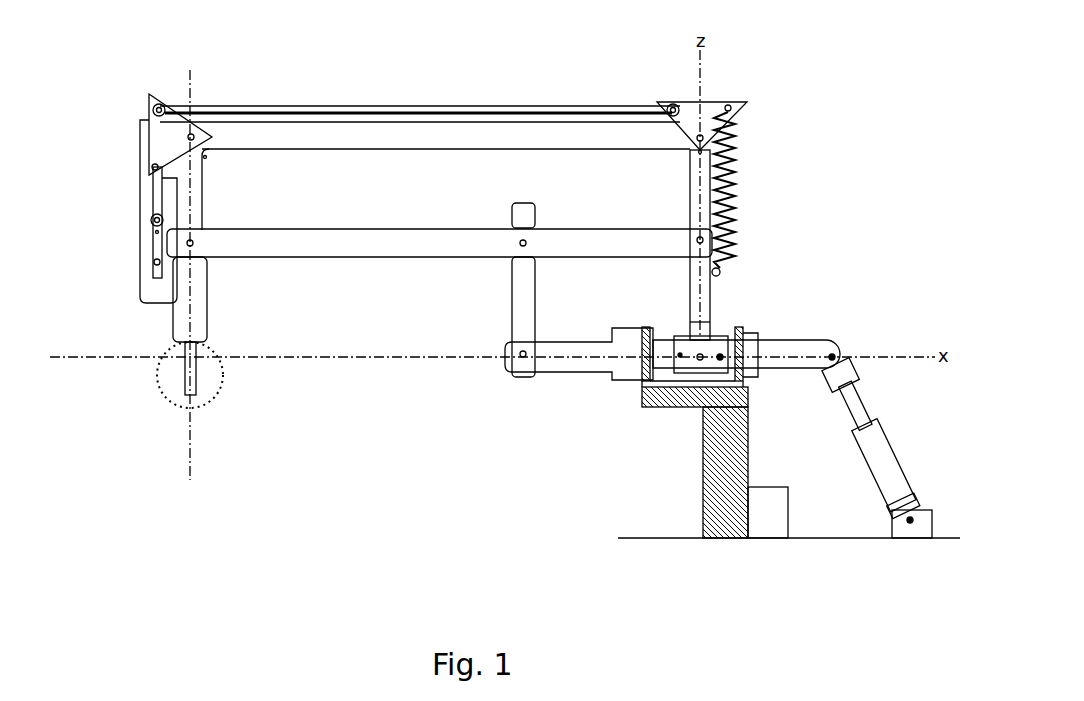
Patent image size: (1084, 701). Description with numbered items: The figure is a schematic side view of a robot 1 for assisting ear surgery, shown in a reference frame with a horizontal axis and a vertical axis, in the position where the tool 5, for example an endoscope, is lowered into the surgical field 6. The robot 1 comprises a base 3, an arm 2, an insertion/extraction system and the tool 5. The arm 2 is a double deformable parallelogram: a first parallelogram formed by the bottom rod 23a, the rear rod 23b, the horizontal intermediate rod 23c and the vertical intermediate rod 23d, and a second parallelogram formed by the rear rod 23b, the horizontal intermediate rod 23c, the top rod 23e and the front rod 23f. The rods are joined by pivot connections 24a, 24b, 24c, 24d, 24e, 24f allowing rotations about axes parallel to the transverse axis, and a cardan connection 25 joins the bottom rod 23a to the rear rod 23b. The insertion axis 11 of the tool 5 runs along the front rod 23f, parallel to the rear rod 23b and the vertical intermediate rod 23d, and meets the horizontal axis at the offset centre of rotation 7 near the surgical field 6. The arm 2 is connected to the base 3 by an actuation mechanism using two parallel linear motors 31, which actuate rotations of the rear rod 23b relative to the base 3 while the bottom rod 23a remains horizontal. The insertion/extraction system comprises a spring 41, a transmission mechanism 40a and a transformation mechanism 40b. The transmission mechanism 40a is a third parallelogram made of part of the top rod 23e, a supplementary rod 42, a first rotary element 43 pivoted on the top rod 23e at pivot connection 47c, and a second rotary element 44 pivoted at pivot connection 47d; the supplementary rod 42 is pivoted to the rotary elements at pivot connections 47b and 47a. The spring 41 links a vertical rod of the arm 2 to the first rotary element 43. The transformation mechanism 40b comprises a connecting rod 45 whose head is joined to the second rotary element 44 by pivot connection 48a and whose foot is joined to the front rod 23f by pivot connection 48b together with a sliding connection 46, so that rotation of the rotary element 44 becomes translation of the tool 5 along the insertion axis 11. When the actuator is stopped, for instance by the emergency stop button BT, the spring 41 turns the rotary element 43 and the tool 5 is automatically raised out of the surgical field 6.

The robot 1 is at (792, 57).
The arm 2 is at (385, 258).
The base 3 is at (680, 536).
The tool 5 is at (205, 312).
The surgical field 6 is at (160, 385).
The offset centre of rotation 7 is at (198, 358).
The insertion axis 11 is at (186, 452).
The bottom rod 23a is at (580, 372).
The rear rod 23b is at (690, 300).
The horizontal intermediate rod 23c is at (624, 257).
The vertical intermediate rod 23d is at (514, 326).
The top rod 23e is at (482, 150).
The front rod 23f is at (205, 190).
The pivot connection 24a is at (521, 356).
The pivot connection 24b is at (698, 238).
The pivot connection 24c is at (521, 241).
The pivot connection 24d is at (196, 242).
The pivot connection 24e is at (690, 160).
The pivot connection 24f is at (205, 158).
The connection 25 is at (700, 357).
The linear motor 31 is at (872, 448).
The mechanism for transmitting a rotation of a third type 40a is at (745, 104).
The mechanism for transforming the rotation of a third type into translation 40b is at (145, 185).
The spring 41 is at (735, 190).
The supplementary rod 42 is at (482, 110).
The first rotary element 43 is at (712, 108).
The second rotary element 44 is at (150, 130).
The connecting rod 45 is at (152, 216).
The sliding connection 46 is at (152, 262).
The pivot connection 47a is at (164, 104).
The pivot connection 47b is at (668, 106).
The pivot connection 47c is at (698, 134).
The pivot connection 47d is at (200, 128).
The pivot connection 48a is at (150, 168).
The pivot connection 48b is at (153, 232).
The emergency stop button BT is at (764, 520).